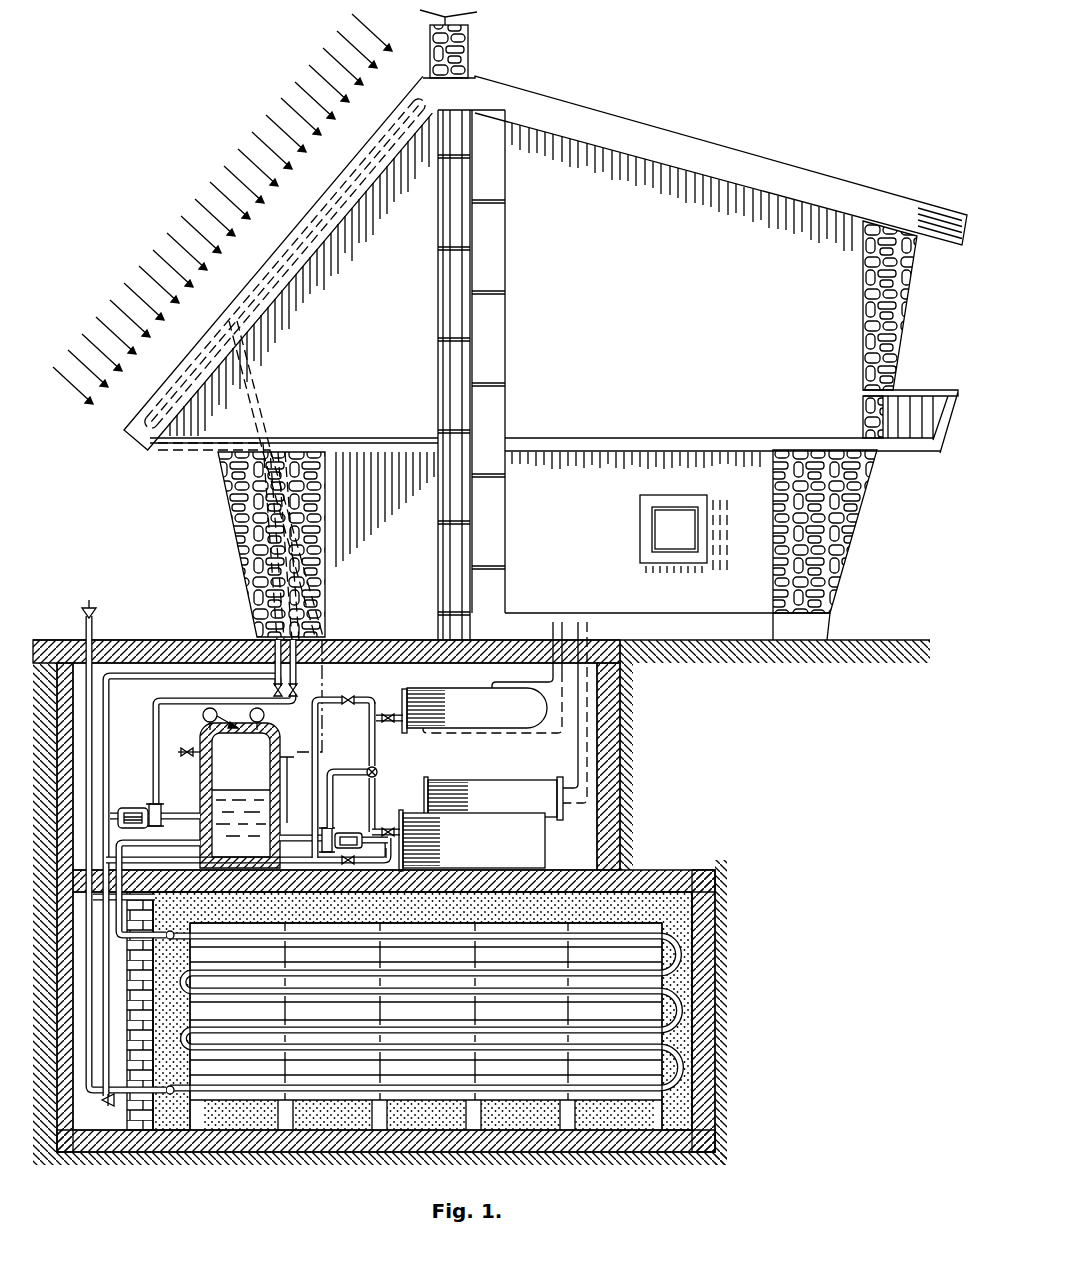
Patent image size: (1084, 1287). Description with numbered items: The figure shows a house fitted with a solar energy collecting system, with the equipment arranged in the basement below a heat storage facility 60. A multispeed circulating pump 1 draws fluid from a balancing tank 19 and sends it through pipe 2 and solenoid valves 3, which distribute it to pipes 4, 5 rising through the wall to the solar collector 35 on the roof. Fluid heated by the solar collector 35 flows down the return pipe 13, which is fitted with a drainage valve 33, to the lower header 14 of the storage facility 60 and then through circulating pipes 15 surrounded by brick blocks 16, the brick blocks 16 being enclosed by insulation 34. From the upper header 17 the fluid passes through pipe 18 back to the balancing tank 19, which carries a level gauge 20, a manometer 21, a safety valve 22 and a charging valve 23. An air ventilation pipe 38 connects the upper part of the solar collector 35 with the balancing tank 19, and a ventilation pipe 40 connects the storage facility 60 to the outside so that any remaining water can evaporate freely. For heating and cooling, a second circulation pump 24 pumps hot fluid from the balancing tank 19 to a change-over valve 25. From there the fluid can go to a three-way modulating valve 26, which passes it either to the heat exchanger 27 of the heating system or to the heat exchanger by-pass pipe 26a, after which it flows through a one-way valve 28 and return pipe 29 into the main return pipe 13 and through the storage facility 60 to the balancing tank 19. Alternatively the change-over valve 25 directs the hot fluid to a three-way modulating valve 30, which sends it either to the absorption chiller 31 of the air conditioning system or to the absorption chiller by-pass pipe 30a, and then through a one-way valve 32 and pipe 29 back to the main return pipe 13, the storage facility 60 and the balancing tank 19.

The multispeed circulating pump 1 is at (119, 813).
The pipe 2 is at (153, 710).
The solenoid valves 3 is at (273, 692).
The pipe 4 is at (272, 647).
The pipe 5 is at (268, 618).
The return pipe 13 is at (162, 674).
The lower header 14 is at (166, 1094).
The circulating pipes 15 is at (267, 1088).
The brick blocks 16 is at (349, 1067).
The upper header 17 is at (165, 929).
The pipe 18 is at (190, 842).
The balancing tank 19 is at (226, 784).
The level gauge 20 is at (296, 790).
The manometer 21 is at (265, 716).
The safety valve 22 is at (204, 719).
The charging valve 23 is at (189, 758).
The second circulation pump 24 is at (360, 838).
The change-over valve 25 is at (367, 794).
The three-way modulating valve 26 is at (387, 767).
The heat exchanger by-pass pipe 26a is at (398, 712).
The heat exchanger 27 is at (470, 719).
The one-way valve 28 is at (343, 768).
The return pipe 29 is at (185, 860).
The three-way modulating valve 30 is at (386, 819).
The absorption chiller by-pass pipe 30a is at (390, 866).
The absorption chiller 31 is at (468, 853).
The one-way valve 32 is at (348, 866).
The drainage valve 33 is at (96, 1109).
The insulation 34 is at (673, 910).
The solar collector 35 is at (201, 344).
The air ventilation pipe 38 is at (264, 418).
The ventilation pipe 40 is at (96, 613).
The storage facility 60 is at (736, 975).